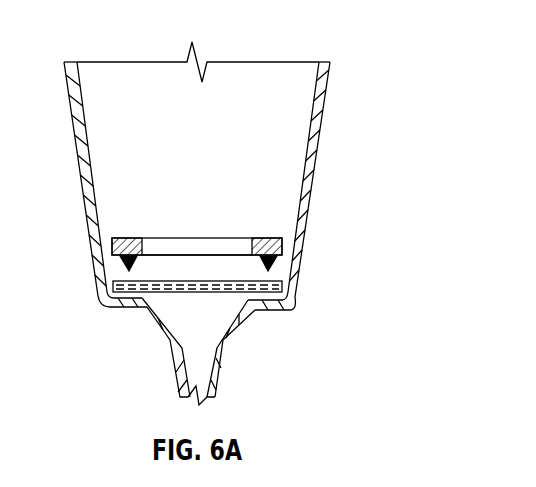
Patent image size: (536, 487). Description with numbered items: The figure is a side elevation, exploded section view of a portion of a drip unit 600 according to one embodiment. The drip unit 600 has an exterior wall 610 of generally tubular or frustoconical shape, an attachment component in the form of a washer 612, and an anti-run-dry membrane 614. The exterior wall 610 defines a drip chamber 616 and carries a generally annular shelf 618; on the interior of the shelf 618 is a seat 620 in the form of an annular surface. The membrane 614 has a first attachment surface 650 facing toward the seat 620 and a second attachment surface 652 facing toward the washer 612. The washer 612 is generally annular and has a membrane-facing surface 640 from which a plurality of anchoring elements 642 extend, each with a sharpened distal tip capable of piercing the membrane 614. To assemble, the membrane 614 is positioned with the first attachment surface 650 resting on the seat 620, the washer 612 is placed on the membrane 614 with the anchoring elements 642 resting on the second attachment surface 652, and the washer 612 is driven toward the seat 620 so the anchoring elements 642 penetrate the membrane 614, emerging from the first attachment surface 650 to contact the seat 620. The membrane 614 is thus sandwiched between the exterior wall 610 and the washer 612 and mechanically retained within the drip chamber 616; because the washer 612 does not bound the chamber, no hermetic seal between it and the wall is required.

The drip unit 600 is at (343, 44).
The exterior wall 610 is at (330, 174).
The drip chamber 616 is at (218, 135).
The shelf 618 is at (130, 352).
The anti-run-dry membrane 614 is at (234, 306).
The washer 612 is at (161, 233).
The anchoring elements 642 is at (282, 256).
The membrane-facing surface 640 is at (133, 272).
The second attachment surface 652 is at (186, 276).
The seat 620 is at (283, 287).
The first attachment surface 650 is at (153, 296).